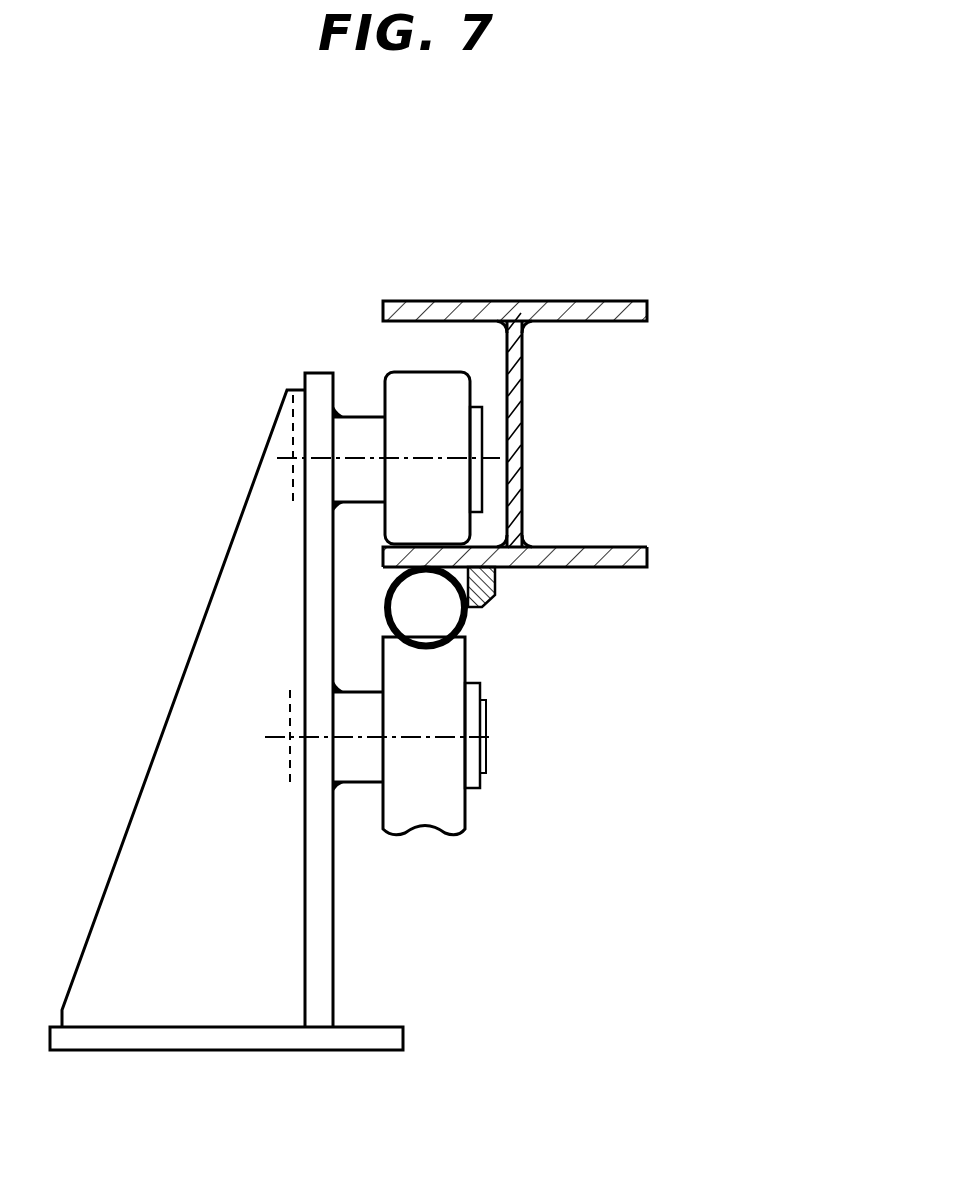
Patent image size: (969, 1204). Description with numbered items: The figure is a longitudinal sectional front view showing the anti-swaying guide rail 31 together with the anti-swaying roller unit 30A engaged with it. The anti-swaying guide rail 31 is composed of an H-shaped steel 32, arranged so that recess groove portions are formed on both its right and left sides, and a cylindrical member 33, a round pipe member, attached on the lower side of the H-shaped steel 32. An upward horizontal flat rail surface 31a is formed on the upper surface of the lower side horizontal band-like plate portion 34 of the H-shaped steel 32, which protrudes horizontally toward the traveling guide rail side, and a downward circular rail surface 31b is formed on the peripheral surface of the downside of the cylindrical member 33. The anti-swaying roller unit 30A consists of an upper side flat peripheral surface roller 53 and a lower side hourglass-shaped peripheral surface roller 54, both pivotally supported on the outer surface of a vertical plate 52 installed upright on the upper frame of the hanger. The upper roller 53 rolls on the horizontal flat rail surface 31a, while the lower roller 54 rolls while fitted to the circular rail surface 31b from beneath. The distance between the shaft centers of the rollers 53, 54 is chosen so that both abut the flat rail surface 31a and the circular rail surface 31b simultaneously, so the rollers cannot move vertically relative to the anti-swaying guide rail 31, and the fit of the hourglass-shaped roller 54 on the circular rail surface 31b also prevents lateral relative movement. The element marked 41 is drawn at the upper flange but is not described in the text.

The anti-swaying roller unit 30A is at (311, 356).
The anti-swaying guide rail 31 is at (608, 445).
The horizontal flat rail surface 31a is at (423, 540).
The circular rail surface 31b is at (422, 652).
The H-shaped steel 32 is at (523, 306).
The cylindrical member 33 is at (383, 597).
The lower side horizontal band-like plate portion 34 is at (383, 557).
The upper flange of rail 41 is at (432, 305).
The vertical plate 52 is at (320, 943).
The upper side flat peripheral surface roller 53 is at (413, 438).
The lower side hourglass-shaped peripheral surface roller 54 is at (442, 797).